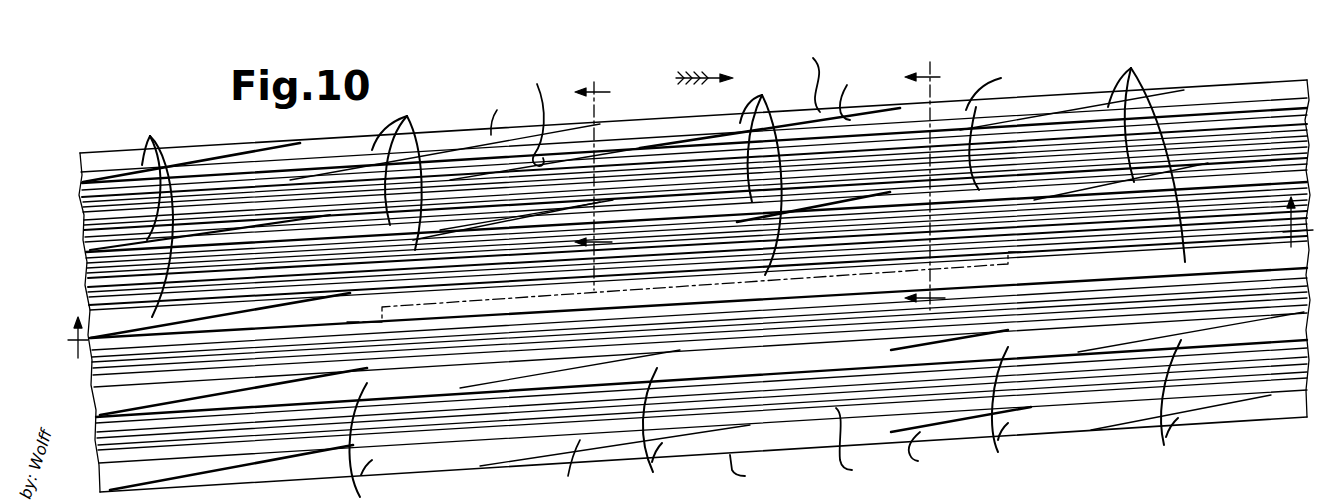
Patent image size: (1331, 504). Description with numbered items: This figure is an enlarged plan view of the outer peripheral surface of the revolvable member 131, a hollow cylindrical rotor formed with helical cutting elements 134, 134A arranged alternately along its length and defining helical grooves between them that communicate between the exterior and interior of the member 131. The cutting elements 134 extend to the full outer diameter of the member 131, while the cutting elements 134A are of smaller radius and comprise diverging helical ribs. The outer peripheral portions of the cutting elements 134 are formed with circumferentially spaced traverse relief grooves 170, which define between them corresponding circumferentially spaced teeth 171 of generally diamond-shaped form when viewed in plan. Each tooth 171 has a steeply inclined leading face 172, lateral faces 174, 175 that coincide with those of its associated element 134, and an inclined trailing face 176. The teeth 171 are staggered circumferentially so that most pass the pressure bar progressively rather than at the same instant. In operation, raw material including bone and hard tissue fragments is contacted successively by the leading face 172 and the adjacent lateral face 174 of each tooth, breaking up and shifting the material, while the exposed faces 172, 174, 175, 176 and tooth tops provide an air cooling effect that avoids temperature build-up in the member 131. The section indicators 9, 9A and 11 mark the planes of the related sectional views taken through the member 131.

The revolvable member 131 is at (1236, 78).
The helical cutting element 134 is at (82, 170).
The helical cutting element 134A is at (84, 212).
The traverse relief groove 170 is at (696, 285).
The tooth 171 is at (657, 276).
The leading face 172 is at (897, 276).
The lateral face 174 is at (652, 275).
The lateral face 175 is at (845, 262).
The trailing face 176 is at (532, 296).
The section line 9- 9 is at (684, 192).
The section line 9A- 9A is at (602, 178).
The section line 11- 11 is at (683, 285).